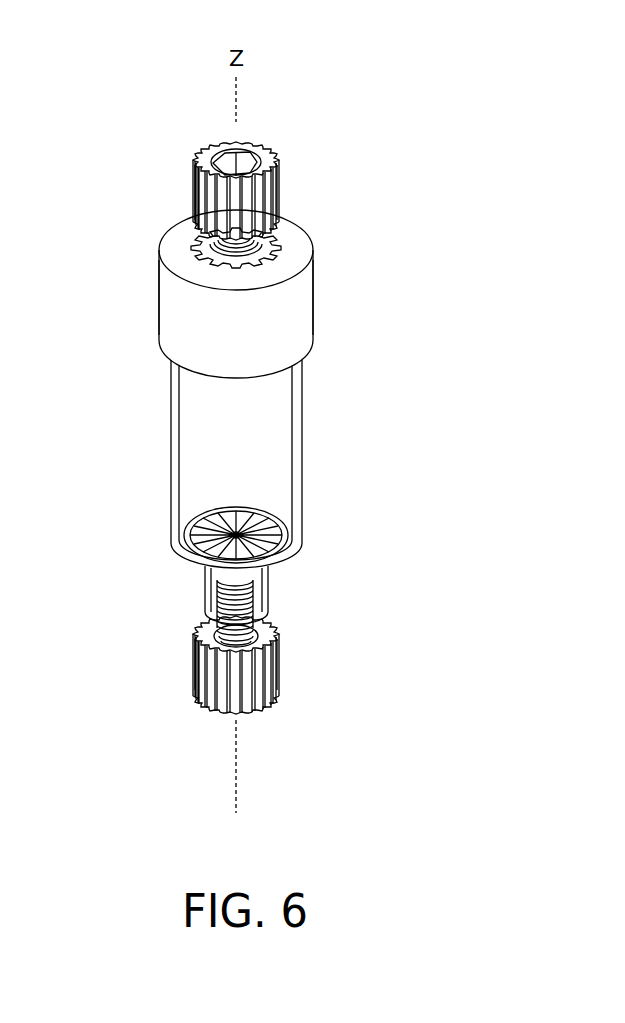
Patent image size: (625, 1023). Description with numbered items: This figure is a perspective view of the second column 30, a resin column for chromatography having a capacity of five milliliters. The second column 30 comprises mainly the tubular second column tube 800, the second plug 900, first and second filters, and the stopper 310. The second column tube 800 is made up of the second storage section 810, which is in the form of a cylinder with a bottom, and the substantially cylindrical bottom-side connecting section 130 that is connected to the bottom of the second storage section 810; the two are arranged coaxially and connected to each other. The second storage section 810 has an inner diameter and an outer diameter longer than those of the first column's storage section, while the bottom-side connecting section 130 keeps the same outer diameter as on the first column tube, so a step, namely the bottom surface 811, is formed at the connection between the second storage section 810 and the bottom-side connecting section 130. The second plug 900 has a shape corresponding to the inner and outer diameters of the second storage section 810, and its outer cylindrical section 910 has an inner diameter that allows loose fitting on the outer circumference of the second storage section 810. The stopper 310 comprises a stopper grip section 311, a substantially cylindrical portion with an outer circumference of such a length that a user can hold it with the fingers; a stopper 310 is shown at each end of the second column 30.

The second column 30 is at (366, 244).
The stopper 310 is at (283, 147).
The stopper grip section 311 is at (280, 184).
The second plug 900 is at (322, 294).
The outer cylindrical section 910 is at (313, 320).
The second column tube 800 is at (310, 397).
The second storage section 810 is at (302, 450).
The bottom surface 811 is at (290, 562).
The bottom-side connecting section 130 is at (270, 596).